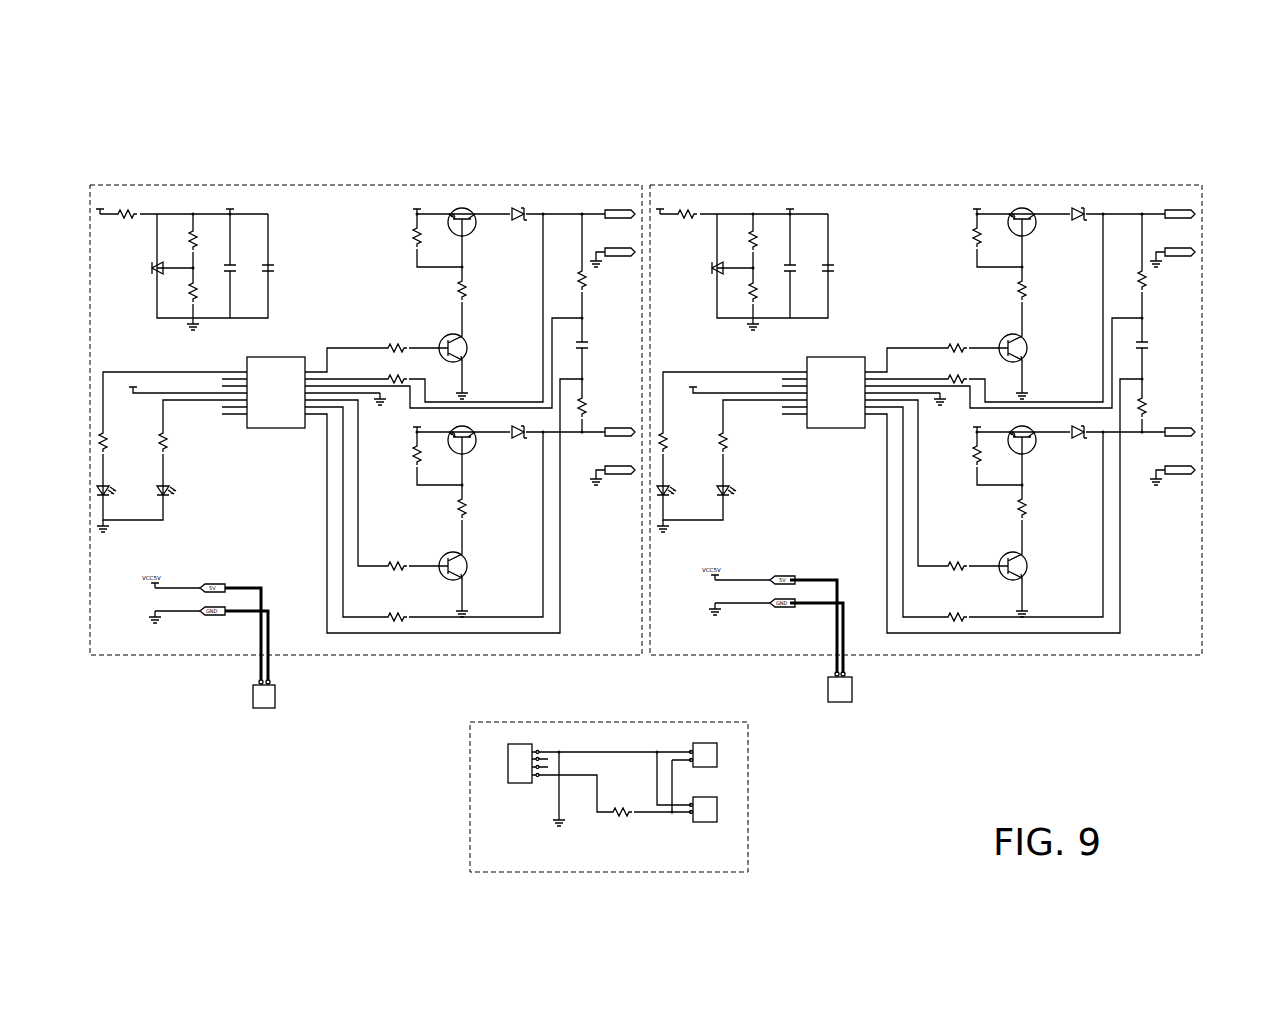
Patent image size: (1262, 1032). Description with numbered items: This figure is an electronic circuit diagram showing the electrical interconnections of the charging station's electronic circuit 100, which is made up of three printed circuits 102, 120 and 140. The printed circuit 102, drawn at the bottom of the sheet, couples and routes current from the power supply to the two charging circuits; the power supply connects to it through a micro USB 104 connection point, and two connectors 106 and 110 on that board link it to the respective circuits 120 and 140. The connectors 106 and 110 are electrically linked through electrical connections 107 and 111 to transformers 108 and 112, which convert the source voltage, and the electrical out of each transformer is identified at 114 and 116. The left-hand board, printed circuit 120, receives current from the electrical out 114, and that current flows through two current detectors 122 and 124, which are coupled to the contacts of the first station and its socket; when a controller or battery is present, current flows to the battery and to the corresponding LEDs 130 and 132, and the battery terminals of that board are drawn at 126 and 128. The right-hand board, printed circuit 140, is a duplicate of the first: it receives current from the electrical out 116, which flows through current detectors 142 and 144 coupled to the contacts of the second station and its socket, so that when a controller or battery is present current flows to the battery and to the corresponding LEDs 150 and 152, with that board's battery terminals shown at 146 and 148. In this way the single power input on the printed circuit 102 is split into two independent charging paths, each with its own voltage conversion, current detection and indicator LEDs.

The electronic circuit 100 is at (585, 78).
The printed circuit 102 is at (628, 872).
The micro USB connection point 104 is at (512, 771).
The connector 106 is at (266, 696).
The electrical connection 107 is at (104, 203).
The transformer 108 is at (178, 212).
The connector 110 is at (845, 690).
The electrical connection 111 is at (720, 418).
The transformer 112 is at (777, 228).
The electrical out 114 is at (231, 206).
The electrical out 116 is at (753, 254).
The printed circuit 120 is at (383, 222).
The current detector 122 is at (427, 302).
The current detector 124 is at (520, 514).
The first battery terminal BAT1 126 is at (617, 209).
The second battery terminal BAT2 128 is at (626, 428).
The LED 130 is at (117, 512).
The LED 132 is at (180, 499).
The printed circuit 140 is at (923, 230).
The current detector 142 is at (1005, 299).
The current detector 144 is at (1079, 517).
The third battery terminal BAT1 146 is at (1181, 195).
The fourth battery terminal BAT2 148 is at (1206, 438).
The LED 150 is at (681, 542).
The LED 152 is at (773, 490).